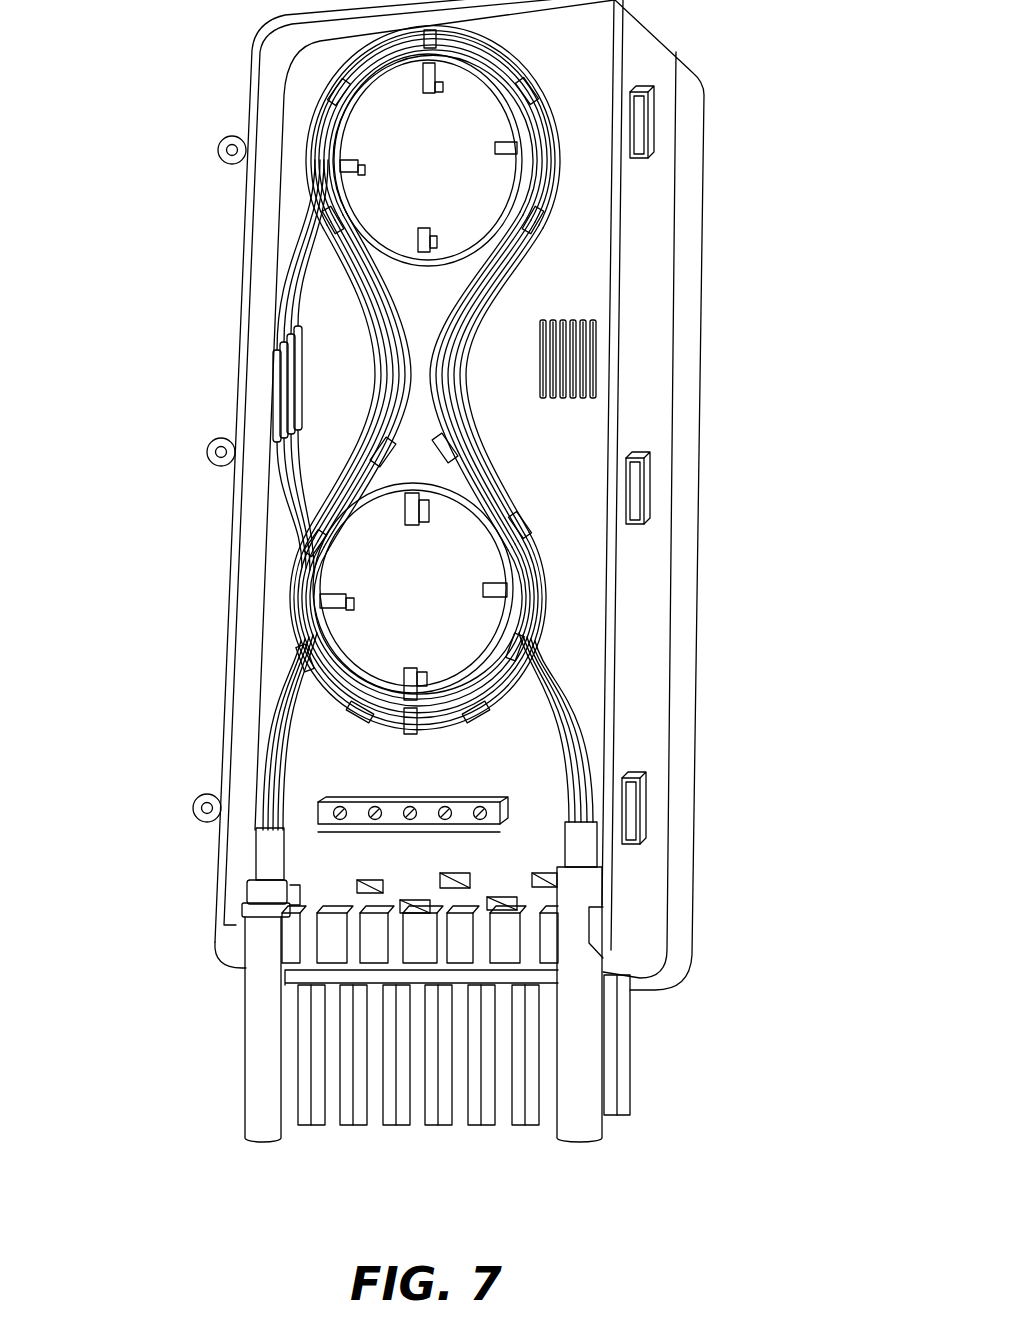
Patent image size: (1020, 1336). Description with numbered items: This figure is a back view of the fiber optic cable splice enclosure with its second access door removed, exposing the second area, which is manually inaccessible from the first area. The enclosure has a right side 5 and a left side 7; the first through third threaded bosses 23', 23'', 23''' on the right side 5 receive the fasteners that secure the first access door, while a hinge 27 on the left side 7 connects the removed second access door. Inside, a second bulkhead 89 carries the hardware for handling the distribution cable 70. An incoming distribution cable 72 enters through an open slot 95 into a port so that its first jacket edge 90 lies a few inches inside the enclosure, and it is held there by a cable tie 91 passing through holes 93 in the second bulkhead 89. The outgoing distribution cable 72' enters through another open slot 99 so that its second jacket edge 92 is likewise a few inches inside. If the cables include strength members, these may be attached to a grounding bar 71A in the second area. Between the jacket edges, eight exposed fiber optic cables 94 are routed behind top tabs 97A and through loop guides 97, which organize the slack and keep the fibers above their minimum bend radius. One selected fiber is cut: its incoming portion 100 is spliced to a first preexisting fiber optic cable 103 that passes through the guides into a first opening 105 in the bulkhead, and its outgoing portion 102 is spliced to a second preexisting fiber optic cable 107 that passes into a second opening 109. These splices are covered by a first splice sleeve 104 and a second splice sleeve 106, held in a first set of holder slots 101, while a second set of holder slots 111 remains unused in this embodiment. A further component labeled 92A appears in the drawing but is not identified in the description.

The right side 5 is at (258, 617).
The left side 7 is at (648, 607).
The first threaded boss 23' is at (185, 146).
The second threaded boss 23'' is at (172, 449).
The third threaded boss 23''' is at (158, 805).
The hinge 27 is at (652, 120).
The distribution cable 70 is at (360, 1128).
The grounding bar 71A is at (462, 800).
The incoming distribution cable 72 is at (219, 1029).
The outgoing distribution cable 72' is at (615, 1028).
The second bulkhead 89 is at (566, 467).
The first jacket edge 90 is at (270, 838).
The cable tie 91 is at (258, 962).
The second jacket edge 92 is at (598, 830).
The fiber clip 92A is at (458, 436).
The holes 93 is at (330, 910).
The fiber optic cables 94 is at (275, 765).
The open slot 95 is at (244, 948).
The loop guides 97 is at (490, 46).
The top tabs 97A is at (533, 216).
The open slot 99 is at (605, 923).
The incoming portion 100 is at (285, 478).
The first set of holder slots 101 is at (293, 372).
The outgoing portion 102 is at (300, 292).
The first preexisting fiber optic cable 103 is at (292, 295).
The first splice sleeve 104 is at (276, 340).
The first opening 105 is at (360, 665).
The second splice sleeve 106 is at (289, 437).
The second preexisting fiber optic cable 107 is at (492, 222).
The second opening 109 is at (380, 118).
The second set of holder slots 111 is at (576, 310).